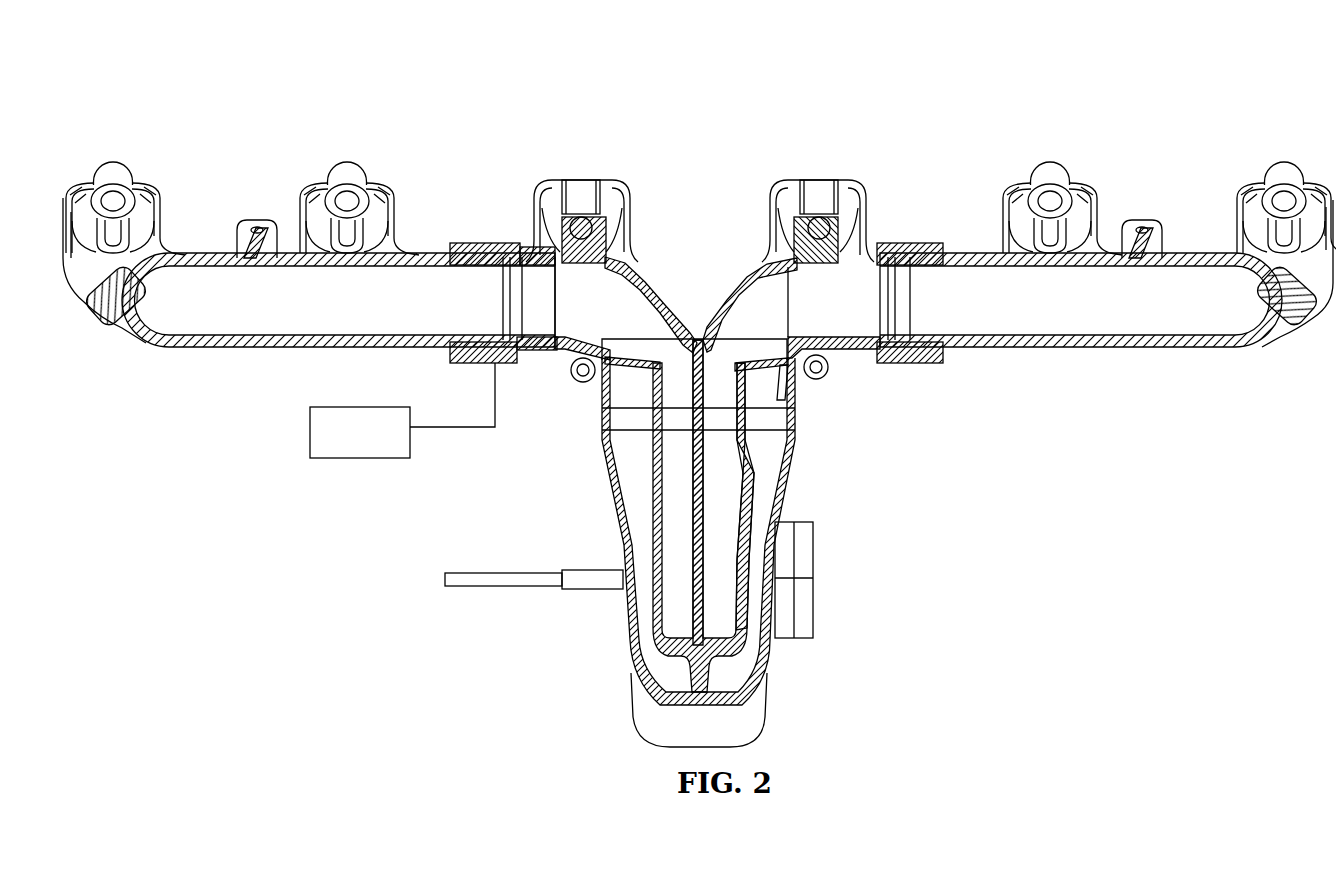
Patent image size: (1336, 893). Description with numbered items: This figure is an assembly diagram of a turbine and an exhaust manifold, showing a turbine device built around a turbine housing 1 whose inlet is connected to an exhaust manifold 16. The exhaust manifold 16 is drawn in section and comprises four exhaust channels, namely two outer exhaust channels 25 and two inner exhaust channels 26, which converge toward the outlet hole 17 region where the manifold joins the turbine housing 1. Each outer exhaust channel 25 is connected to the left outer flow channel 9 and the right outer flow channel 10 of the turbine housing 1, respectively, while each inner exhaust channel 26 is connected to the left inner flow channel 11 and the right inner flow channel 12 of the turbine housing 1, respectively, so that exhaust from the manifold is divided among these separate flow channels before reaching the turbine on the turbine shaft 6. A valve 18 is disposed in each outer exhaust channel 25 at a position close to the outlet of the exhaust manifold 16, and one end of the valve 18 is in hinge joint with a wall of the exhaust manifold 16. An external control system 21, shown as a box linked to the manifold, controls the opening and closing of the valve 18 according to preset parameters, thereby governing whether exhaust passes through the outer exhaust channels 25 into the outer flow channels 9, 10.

The turbine housing 1 is at (833, 583).
The turbine shaft 6 is at (520, 577).
The left outer flow channel 9 is at (635, 497).
The right outer flow channel 10 is at (763, 473).
The left inner flow channel 11 is at (680, 586).
The right inner flow channel 12 is at (748, 600).
The exhaust manifold 16 is at (1077, 305).
The outlet hole 17 is at (655, 403).
The valve 18 is at (612, 358).
The control system 21 is at (368, 437).
The outer exhaust channel 25 is at (635, 367).
The inner exhaust channel 26 is at (715, 372).